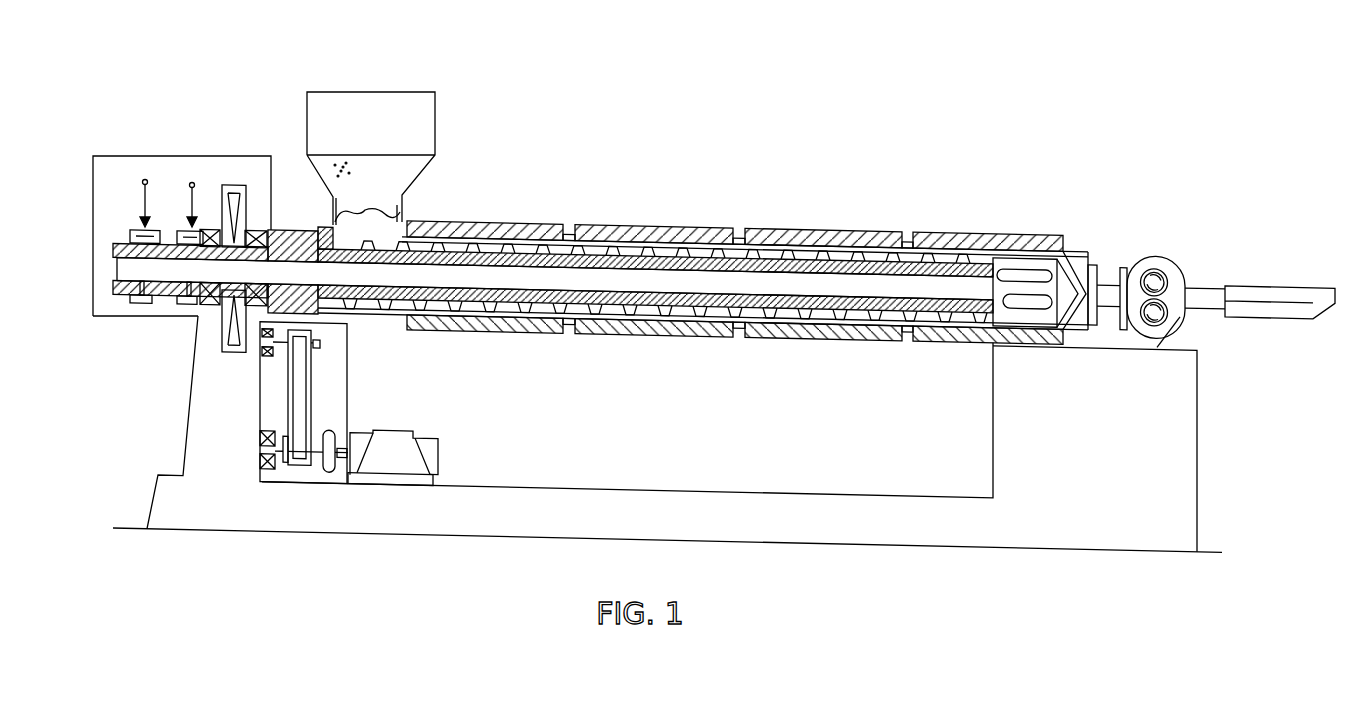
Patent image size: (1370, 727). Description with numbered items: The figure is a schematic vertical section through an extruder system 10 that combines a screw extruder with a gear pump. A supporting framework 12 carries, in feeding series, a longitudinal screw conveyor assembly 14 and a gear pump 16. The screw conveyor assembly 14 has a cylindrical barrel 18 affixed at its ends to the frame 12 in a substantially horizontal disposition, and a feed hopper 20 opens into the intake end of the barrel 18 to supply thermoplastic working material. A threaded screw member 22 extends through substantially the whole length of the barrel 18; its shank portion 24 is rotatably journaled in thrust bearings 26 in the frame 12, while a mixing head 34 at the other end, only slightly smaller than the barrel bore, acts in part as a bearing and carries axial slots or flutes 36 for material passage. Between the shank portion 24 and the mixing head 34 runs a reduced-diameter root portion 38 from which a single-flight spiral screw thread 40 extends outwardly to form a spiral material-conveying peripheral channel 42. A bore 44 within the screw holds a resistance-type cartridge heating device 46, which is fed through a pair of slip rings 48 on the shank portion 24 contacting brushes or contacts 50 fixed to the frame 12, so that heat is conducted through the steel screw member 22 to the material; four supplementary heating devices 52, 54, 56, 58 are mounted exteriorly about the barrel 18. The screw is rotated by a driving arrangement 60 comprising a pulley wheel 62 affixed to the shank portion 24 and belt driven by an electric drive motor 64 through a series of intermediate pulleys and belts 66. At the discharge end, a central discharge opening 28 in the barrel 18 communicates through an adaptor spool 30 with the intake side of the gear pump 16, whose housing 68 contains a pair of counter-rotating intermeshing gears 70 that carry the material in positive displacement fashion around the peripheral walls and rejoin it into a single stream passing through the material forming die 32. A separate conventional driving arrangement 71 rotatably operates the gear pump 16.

The extruder system 10 is at (1007, 171).
The supporting framework 12 is at (718, 491).
The screw conveyor assembly 14 is at (545, 223).
The gear pump 16 is at (1160, 258).
The barrel 18 is at (580, 225).
The feed hopper 20 is at (387, 92).
The screw member 22 is at (970, 267).
The shank portion 24 is at (122, 243).
The thrust bearings 26 is at (253, 233).
The central discharge opening 28 is at (1086, 296).
The adaptor spool 30 is at (1112, 278).
The material forming die 32 is at (1296, 262).
The mixing head 34 is at (1037, 320).
The axial slots or flutes 36 is at (1017, 277).
The root portion 38 is at (408, 228).
The spiral screw thread 40 is at (603, 327).
The peripheral channel 42 is at (528, 313).
The bore 44 is at (367, 252).
The cartridge heating device 46 is at (798, 278).
The slip rings 48 is at (190, 306).
The electrical brushes or contacts 50 is at (192, 182).
The supplementary heating device 52 is at (453, 330).
The supplementary heating device 54 is at (667, 332).
The supplementary heating device 56 is at (772, 337).
The supplementary heating device 58 is at (940, 333).
The driving arrangement 60 is at (362, 410).
The pulley wheel 62 is at (220, 197).
The electric drive motor 64 is at (443, 452).
The intermediate pulleys and belts 66 is at (274, 402).
The outer body or housing 68 is at (1180, 282).
The intermeshing gears 70 is at (1172, 307).
The driving arrangement for gear pump 71 is at (1157, 341).